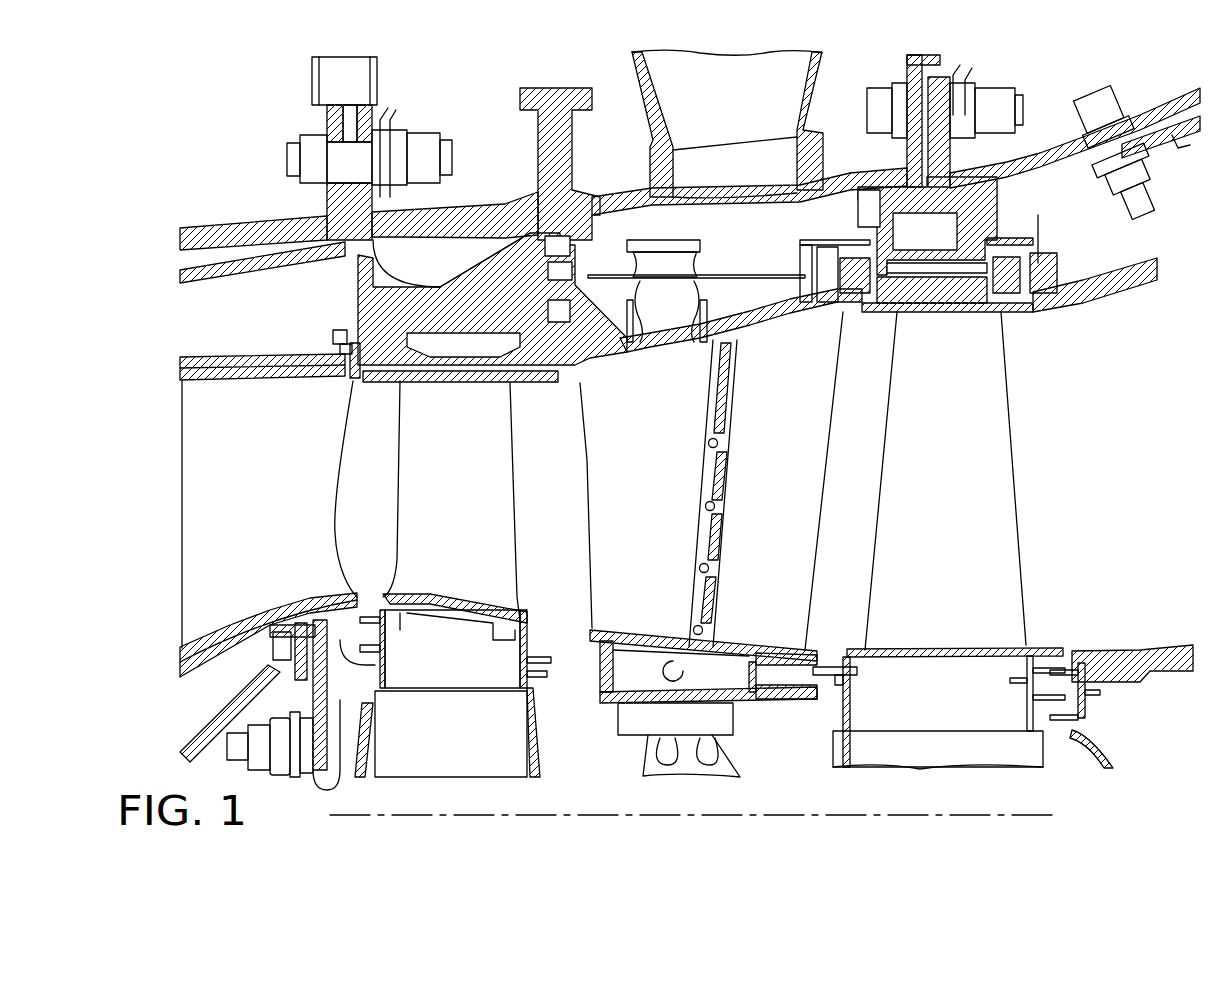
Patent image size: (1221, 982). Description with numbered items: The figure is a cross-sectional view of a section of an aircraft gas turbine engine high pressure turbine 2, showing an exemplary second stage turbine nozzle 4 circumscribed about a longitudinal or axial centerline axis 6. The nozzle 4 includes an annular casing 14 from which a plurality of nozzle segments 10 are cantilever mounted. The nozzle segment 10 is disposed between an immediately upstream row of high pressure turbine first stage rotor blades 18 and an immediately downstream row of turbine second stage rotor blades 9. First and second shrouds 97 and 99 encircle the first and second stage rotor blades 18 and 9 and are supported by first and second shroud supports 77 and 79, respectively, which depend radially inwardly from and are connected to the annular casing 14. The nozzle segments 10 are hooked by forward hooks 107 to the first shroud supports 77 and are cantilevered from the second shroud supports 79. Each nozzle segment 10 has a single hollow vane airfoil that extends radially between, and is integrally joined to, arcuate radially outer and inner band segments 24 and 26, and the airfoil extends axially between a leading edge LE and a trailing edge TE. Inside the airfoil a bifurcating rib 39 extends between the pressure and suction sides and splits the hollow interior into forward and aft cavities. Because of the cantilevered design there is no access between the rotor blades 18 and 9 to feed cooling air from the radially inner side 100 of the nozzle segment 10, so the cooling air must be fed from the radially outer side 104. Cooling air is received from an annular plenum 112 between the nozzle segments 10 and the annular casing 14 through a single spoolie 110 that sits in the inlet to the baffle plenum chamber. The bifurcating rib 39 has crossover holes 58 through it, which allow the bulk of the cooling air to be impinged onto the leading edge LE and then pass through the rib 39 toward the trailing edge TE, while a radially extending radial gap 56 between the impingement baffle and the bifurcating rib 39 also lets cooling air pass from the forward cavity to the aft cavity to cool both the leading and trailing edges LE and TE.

The high pressure turbine 2 is at (230, 134).
The second stage turbine nozzle 4 is at (782, 718).
The centerline axis 6 is at (850, 813).
The second stage rotor blades 9 is at (947, 518).
The nozzle segment 10 is at (597, 680).
The annular casing 14 is at (867, 172).
The first stage rotor blades 18 is at (468, 533).
The outer band segment 24 is at (570, 380).
The inner band segment 26 is at (590, 638).
The bifurcating rib 39 is at (728, 536).
The radial gap 56 is at (737, 327).
The crossover holes 58 is at (730, 444).
The first shroud support 77 is at (517, 240).
The second shroud support 79 is at (993, 232).
The first shroud 97 is at (392, 380).
The second shroud 99 is at (1022, 312).
The radially inner side 100 is at (643, 657).
The radially outer side 104 is at (737, 312).
The forward hooks 107 is at (590, 275).
The spoolie 110 is at (716, 276).
The annular plenum 112 is at (762, 225).
The leading edge LE is at (585, 443).
The trailing edge TE is at (823, 467).